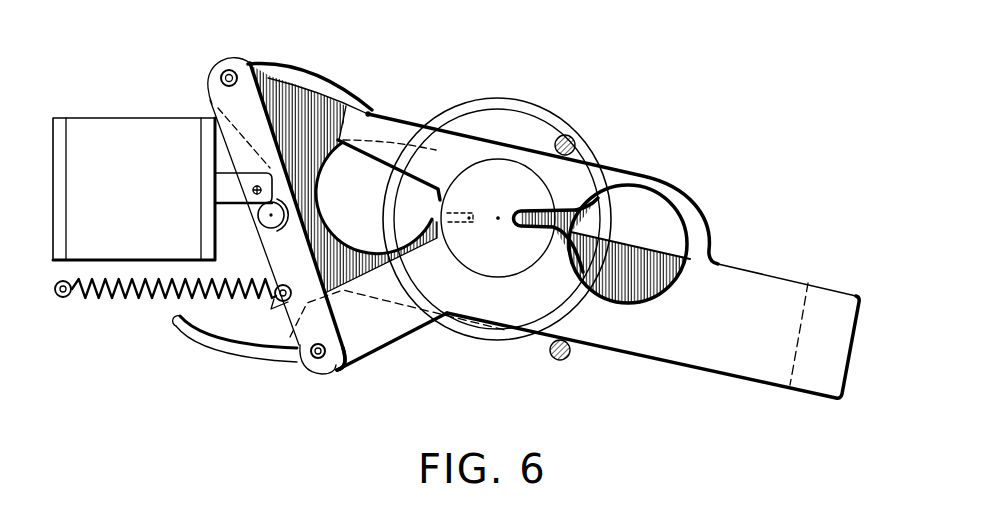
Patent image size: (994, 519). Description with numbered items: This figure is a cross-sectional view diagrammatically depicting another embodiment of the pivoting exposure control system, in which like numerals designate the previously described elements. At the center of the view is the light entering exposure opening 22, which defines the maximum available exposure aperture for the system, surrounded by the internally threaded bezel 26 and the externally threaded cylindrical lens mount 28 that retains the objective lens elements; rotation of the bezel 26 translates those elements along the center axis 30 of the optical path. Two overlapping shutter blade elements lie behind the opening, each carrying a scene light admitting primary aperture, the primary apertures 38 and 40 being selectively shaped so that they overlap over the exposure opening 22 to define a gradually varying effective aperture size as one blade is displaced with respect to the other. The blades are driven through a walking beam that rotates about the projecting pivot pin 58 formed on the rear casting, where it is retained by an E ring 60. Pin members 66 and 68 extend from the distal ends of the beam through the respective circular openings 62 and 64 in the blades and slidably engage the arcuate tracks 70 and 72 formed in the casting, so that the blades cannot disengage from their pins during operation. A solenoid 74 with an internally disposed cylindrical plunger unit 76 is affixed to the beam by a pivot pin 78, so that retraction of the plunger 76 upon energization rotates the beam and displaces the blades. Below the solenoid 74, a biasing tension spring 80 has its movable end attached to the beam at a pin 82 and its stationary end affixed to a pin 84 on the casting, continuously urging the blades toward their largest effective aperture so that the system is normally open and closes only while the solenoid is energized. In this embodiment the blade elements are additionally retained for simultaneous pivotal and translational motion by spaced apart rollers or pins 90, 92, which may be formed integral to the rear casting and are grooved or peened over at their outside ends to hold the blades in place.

The light entering exposure opening 22 is at (491, 192).
The bezel 26 is at (508, 98).
The lens mount 28 is at (520, 107).
The center axis 30 is at (497, 222).
The scene light admitting primary aperture 38 is at (318, 210).
The scene light admitting primary aperture 40 is at (665, 220).
The pivot pin 58 is at (258, 214).
The E ring 60 is at (266, 229).
The circular opening 62 is at (238, 68).
The circular opening 64 is at (338, 372).
The pin member 66 is at (222, 68).
The pin member 68 is at (308, 360).
The arcuate track 70 is at (302, 70).
The arcuate track 72 is at (242, 358).
The solenoid 74 is at (95, 114).
The plunger unit 76 is at (216, 167).
The pivot pin 78 is at (272, 170).
The biasing tension spring 80 is at (164, 292).
The pin 82 is at (276, 302).
The pin 84 is at (63, 298).
The roller or pin 90 is at (575, 140).
The roller or pin 92 is at (563, 359).